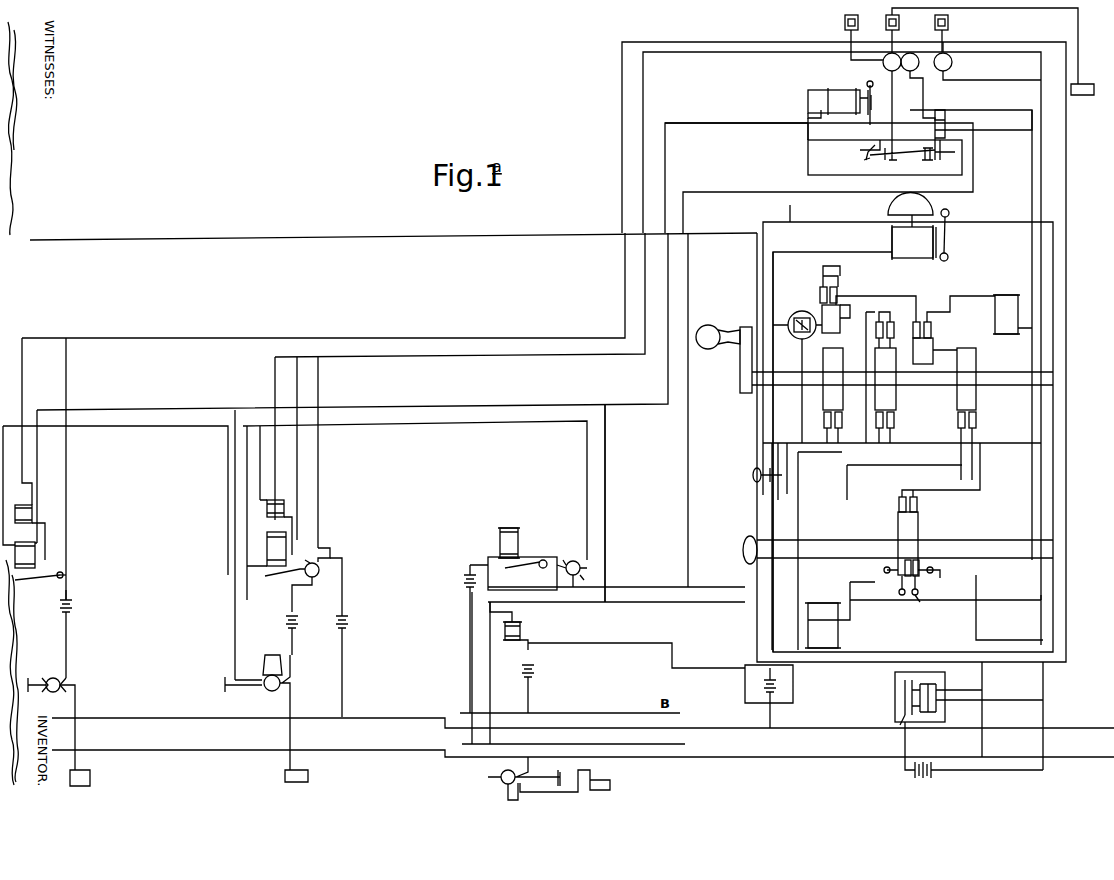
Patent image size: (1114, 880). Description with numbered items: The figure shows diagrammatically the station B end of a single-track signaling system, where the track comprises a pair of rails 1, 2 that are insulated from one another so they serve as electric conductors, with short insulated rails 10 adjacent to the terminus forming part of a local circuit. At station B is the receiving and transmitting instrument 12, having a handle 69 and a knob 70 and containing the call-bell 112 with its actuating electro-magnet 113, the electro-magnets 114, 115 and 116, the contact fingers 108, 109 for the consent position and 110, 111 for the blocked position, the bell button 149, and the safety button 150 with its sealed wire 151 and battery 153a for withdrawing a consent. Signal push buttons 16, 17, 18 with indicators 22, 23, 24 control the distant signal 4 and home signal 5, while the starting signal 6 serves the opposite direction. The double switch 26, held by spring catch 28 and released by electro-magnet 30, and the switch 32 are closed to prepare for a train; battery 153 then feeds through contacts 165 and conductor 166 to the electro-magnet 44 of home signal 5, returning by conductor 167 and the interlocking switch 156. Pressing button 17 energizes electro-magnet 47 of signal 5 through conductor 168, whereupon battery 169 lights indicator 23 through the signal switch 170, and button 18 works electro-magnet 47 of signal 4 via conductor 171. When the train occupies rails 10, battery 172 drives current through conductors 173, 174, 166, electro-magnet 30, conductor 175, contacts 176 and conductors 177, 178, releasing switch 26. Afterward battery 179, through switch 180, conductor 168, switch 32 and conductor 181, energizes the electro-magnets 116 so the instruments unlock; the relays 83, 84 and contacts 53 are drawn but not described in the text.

The rail 1 is at (355, 758).
The rail 2 is at (367, 712).
The distant signal 4 is at (30, 672).
The home signal 5 is at (268, 652).
The starting signal 6 is at (503, 790).
The short rails 10 is at (464, 712).
The receiving and transmitting instrument 12 is at (876, 331).
The signal push button 16 is at (950, 70).
The signal push button 17 is at (880, 52).
The signal push button 18 is at (915, 70).
The indicator 22 is at (948, 22).
The signal indicator 23 is at (858, 22).
The indicator 24 is at (899, 22).
The double switch 26 is at (897, 158).
The catch 28 is at (861, 149).
The releasing electro-magnet 30 is at (840, 110).
The switch 32 is at (983, 135).
The electro-magnet 44 is at (35, 557).
The electro-magnet 47 is at (32, 513).
The armature contact 53 is at (20, 580).
The handle 69 is at (714, 330).
The knob 70 is at (743, 546).
The relay 83 is at (833, 395).
The relay 84 is at (881, 377).
The contact finger 108 is at (884, 570).
The contact finger 109 is at (949, 582).
The contact finger 110 is at (899, 592).
The contact finger 111 is at (929, 597).
The call-bell 112 is at (910, 210).
The actuating electro-magnet 113 is at (920, 235).
The electro-magnet 114 is at (1012, 314).
The electro-magnet 115 is at (795, 338).
The electro-magnet 116 is at (823, 625).
The bell button 149 is at (753, 475).
The safety button 150 is at (893, 690).
The sealed wire 151 is at (917, 719).
The battery 153 is at (758, 685).
The battery 153a is at (935, 775).
The interlocking switch 156 is at (570, 555).
The contacts 165 is at (862, 160).
The conductor 166 is at (330, 412).
The conductor 167 is at (410, 450).
The conductor 168 is at (405, 356).
The battery 169 is at (284, 617).
The signal switch 170 is at (282, 688).
The conductor 171 is at (270, 338).
The battery 172 is at (468, 570).
The conductor 173 is at (570, 604).
The conductor 174 is at (603, 508).
The conductor 175 is at (832, 176).
The contacts 176 is at (916, 162).
The conductor 177 is at (792, 210).
The conductor 178 is at (660, 586).
The battery 179 is at (346, 620).
The switch 180 is at (278, 577).
The conductor 181 is at (1028, 186).